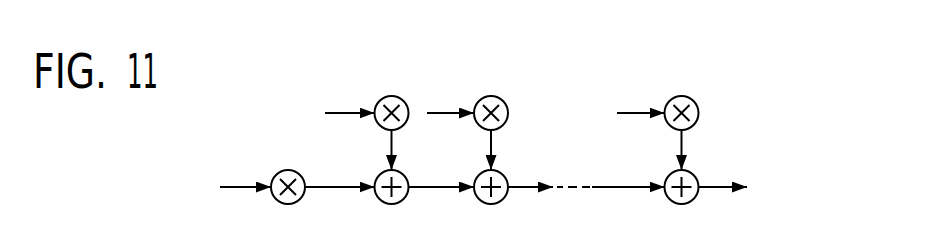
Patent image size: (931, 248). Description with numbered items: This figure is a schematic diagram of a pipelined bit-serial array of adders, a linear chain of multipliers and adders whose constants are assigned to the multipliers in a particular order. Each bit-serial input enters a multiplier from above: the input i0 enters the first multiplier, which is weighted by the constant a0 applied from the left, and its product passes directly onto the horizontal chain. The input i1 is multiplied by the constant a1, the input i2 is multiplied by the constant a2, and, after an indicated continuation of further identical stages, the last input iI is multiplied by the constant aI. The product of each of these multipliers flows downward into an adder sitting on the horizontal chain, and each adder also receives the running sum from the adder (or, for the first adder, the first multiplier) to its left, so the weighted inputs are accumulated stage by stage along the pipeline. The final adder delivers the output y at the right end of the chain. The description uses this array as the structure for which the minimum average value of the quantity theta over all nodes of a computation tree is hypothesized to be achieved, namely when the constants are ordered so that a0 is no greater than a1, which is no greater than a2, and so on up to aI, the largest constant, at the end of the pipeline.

The input i0 is at (288, 170).
The input i1 is at (392, 96).
The input i2 is at (491, 96).
The input iI is at (682, 96).
The multiplier constant alpha 0 a0 is at (236, 170).
The multiplier constant alpha 1 a1 is at (345, 94).
The multiplier constant alpha 2 a2 is at (445, 94).
The multiplier constant alpha I aI is at (633, 94).
The output y is at (738, 183).